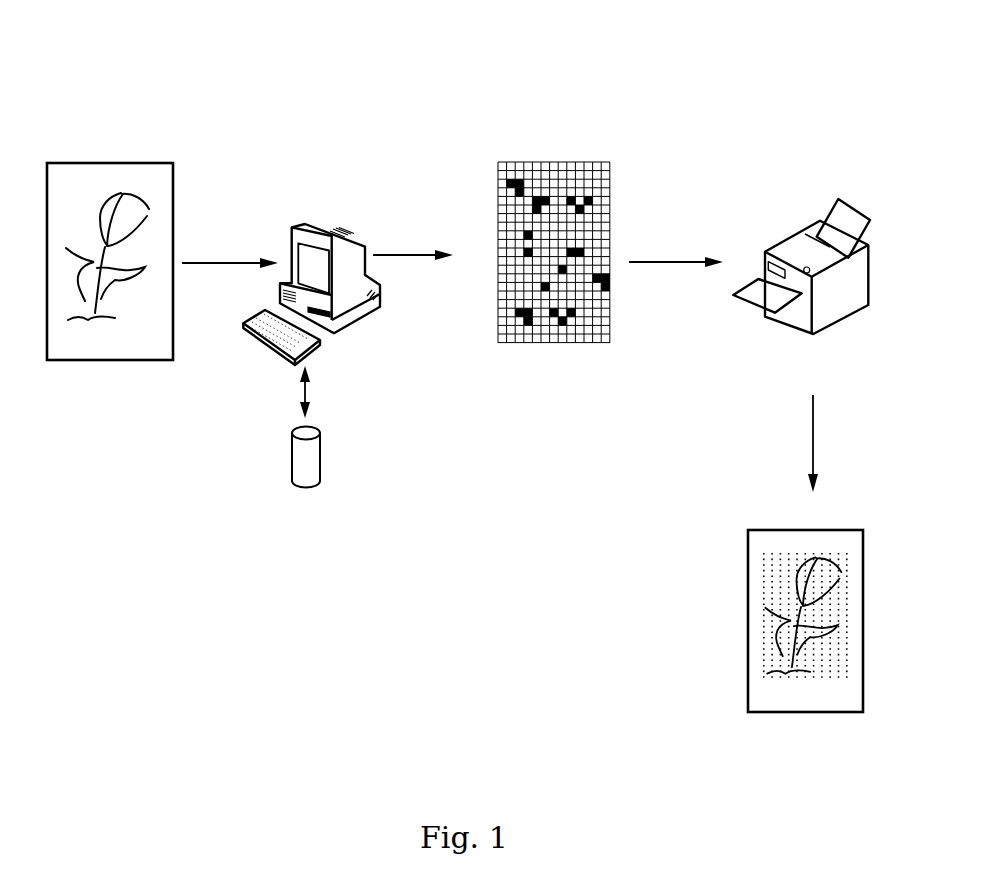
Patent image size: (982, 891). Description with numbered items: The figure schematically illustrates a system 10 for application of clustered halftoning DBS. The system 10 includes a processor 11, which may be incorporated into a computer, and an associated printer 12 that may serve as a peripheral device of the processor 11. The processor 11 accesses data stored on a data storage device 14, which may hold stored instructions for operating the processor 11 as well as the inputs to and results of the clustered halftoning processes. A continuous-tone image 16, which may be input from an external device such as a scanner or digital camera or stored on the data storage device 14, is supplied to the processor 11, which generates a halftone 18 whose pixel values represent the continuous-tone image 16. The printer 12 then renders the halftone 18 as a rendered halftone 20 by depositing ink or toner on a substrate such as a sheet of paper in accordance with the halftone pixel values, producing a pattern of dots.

The system 10 is at (723, 73).
The processor 11 is at (337, 230).
The printer 12 is at (800, 232).
The data storage device 14 is at (320, 460).
The continuous-tone image 16 is at (140, 163).
The halftone 18 is at (568, 162).
The rendered halftone 20 is at (748, 595).